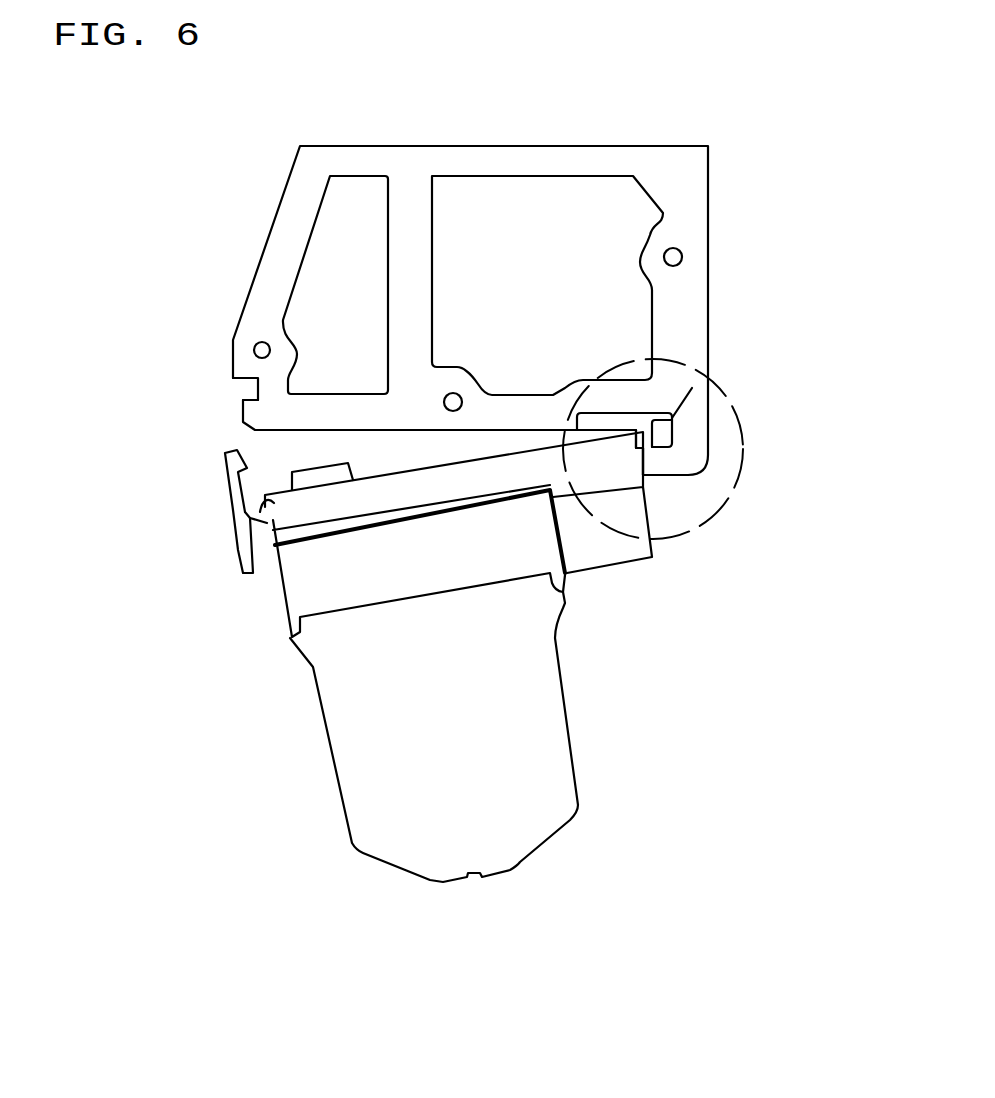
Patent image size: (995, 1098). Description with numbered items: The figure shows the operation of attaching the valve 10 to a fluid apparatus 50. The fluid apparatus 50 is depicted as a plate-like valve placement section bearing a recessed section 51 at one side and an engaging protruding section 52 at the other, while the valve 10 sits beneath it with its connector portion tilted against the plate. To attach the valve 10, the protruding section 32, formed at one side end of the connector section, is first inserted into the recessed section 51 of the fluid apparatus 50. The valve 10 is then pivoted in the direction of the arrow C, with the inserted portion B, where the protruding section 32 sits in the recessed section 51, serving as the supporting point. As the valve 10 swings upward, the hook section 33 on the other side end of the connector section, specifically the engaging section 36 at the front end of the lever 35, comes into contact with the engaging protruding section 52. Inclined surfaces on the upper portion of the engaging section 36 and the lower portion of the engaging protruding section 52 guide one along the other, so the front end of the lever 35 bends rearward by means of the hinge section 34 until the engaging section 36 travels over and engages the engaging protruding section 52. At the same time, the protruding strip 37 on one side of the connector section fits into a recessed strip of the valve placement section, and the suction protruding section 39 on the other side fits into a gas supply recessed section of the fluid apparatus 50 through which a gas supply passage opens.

The valve 10 is at (630, 723).
The protruding section 32 is at (650, 437).
The hook section 33 is at (181, 614).
The hinge section 34 is at (282, 517).
The lever 35 is at (238, 548).
The engaging section 36 is at (223, 453).
The protruding strip 37 is at (602, 433).
The suction protruding section 39 is at (325, 477).
The fluid apparatus 50 is at (752, 189).
The recessed section 51 is at (672, 436).
The engaging protruding section 52 is at (257, 413).
The inserted portion B is at (666, 449).
The direction of pivoting C is at (220, 868).